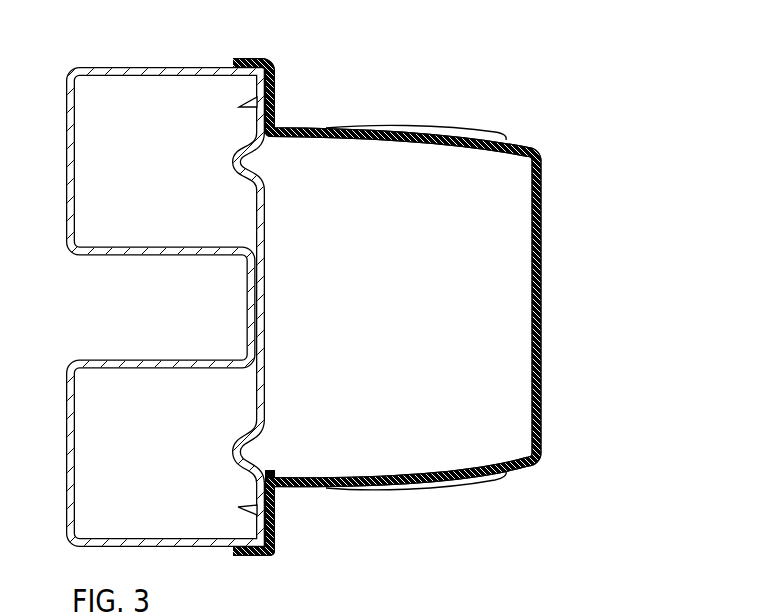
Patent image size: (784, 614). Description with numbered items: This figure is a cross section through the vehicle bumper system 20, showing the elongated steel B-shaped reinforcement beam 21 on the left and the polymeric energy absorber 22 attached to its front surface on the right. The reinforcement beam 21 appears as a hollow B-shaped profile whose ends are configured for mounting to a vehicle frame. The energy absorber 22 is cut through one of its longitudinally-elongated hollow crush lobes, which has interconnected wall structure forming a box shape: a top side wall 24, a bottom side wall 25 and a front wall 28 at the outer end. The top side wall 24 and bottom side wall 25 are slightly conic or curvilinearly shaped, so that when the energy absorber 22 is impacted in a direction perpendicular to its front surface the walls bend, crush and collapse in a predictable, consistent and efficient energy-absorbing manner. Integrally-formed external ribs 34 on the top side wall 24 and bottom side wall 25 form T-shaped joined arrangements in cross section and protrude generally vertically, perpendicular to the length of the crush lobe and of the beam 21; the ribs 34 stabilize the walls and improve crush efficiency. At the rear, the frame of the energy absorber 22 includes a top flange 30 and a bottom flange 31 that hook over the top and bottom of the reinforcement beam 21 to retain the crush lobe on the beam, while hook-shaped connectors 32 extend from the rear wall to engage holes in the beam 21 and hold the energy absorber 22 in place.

The vehicle bumper system 20 is at (330, 303).
The reinforcement beam 21 is at (154, 278).
The energy absorber 22 is at (404, 309).
The top side wall 24 is at (328, 138).
The bottom side wall 25 is at (373, 477).
The front wall 28 is at (543, 262).
The top flange 30 is at (246, 58).
The bottom flange 31 is at (254, 557).
The hook-shaped connector 32 is at (240, 104).
The external rib 34 is at (529, 147).